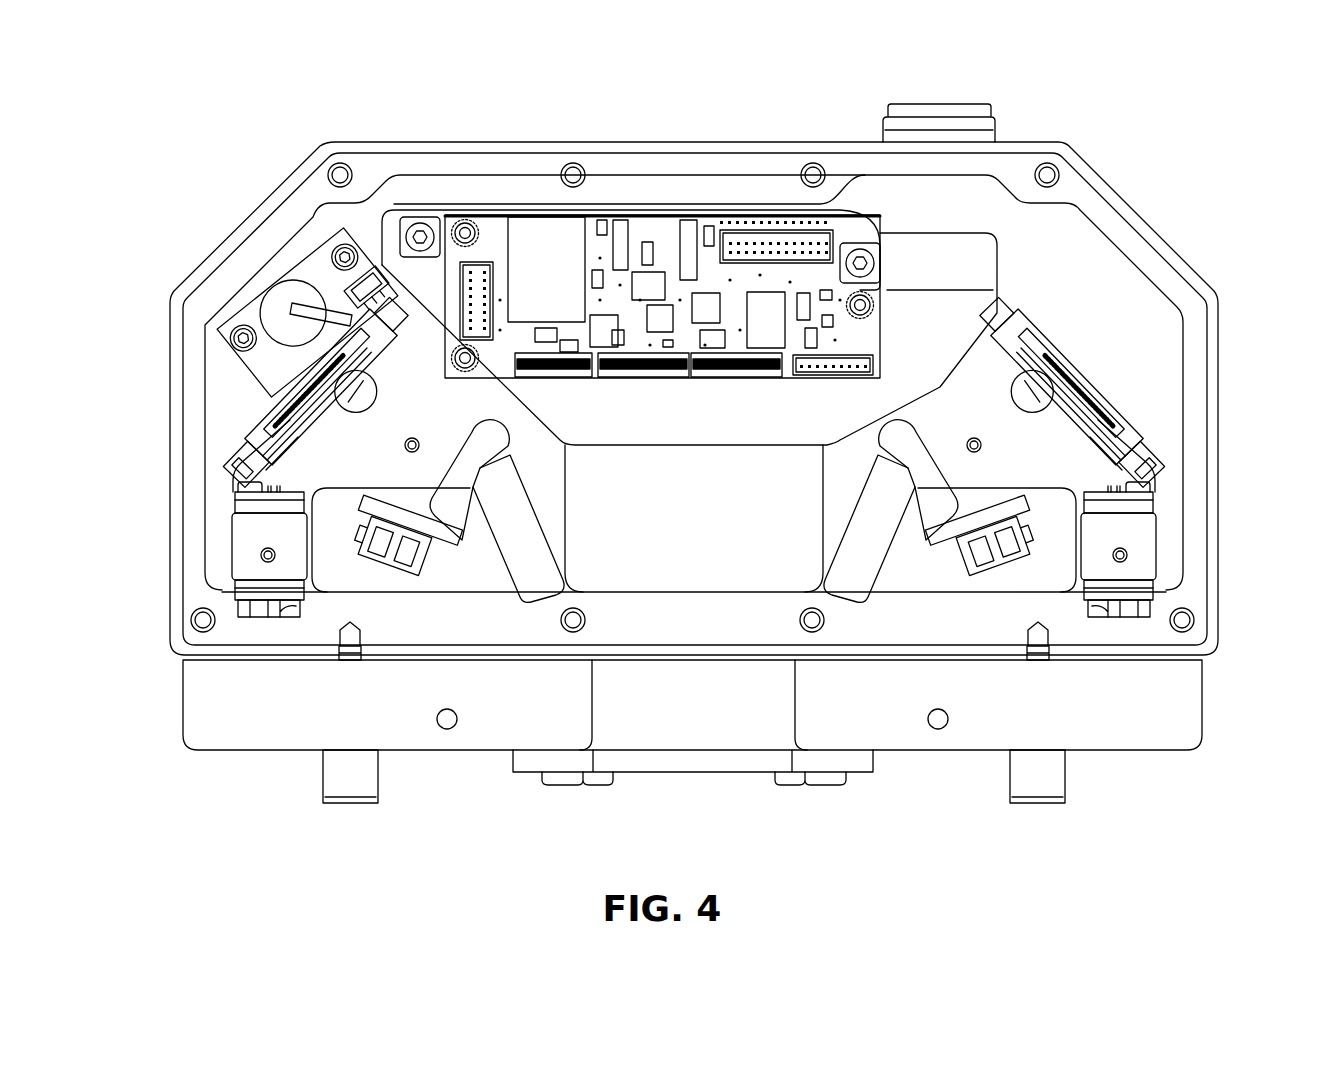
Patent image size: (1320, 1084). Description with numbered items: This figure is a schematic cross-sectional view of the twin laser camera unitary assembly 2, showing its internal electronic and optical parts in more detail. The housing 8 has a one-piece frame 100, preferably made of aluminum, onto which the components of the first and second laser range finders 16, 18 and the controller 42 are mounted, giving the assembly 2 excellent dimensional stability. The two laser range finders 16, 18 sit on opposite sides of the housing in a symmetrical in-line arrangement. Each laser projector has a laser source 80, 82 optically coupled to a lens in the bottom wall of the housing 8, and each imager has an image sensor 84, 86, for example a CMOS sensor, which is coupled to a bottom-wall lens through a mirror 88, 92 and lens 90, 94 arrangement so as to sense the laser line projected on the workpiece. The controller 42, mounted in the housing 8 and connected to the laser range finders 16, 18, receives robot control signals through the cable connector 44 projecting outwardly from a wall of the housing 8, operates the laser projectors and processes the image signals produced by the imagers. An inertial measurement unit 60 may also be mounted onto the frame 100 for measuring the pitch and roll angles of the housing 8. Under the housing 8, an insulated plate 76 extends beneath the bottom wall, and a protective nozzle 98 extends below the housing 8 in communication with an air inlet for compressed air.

The twin laser camera unitary assembly 2 is at (316, 130).
The housing 8 is at (1138, 218).
The first laser range finder 16 is at (232, 470).
The second laser range finder 18 is at (1158, 453).
The controller 42 is at (527, 222).
The cable connector 44 is at (988, 123).
The inertial measurement unit 60 is at (307, 270).
The insulated plate 76 is at (857, 772).
The laser source 80 is at (242, 538).
The laser source 82 is at (1147, 533).
The image sensor 84 is at (290, 405).
The image sensor 86 is at (1093, 397).
The mirror 88 is at (517, 572).
The lens 90 is at (452, 505).
The mirror 92 is at (873, 572).
The lens 94 is at (936, 505).
The protective nozzle 98 is at (1190, 713).
The one-piece frame 100 is at (1167, 280).